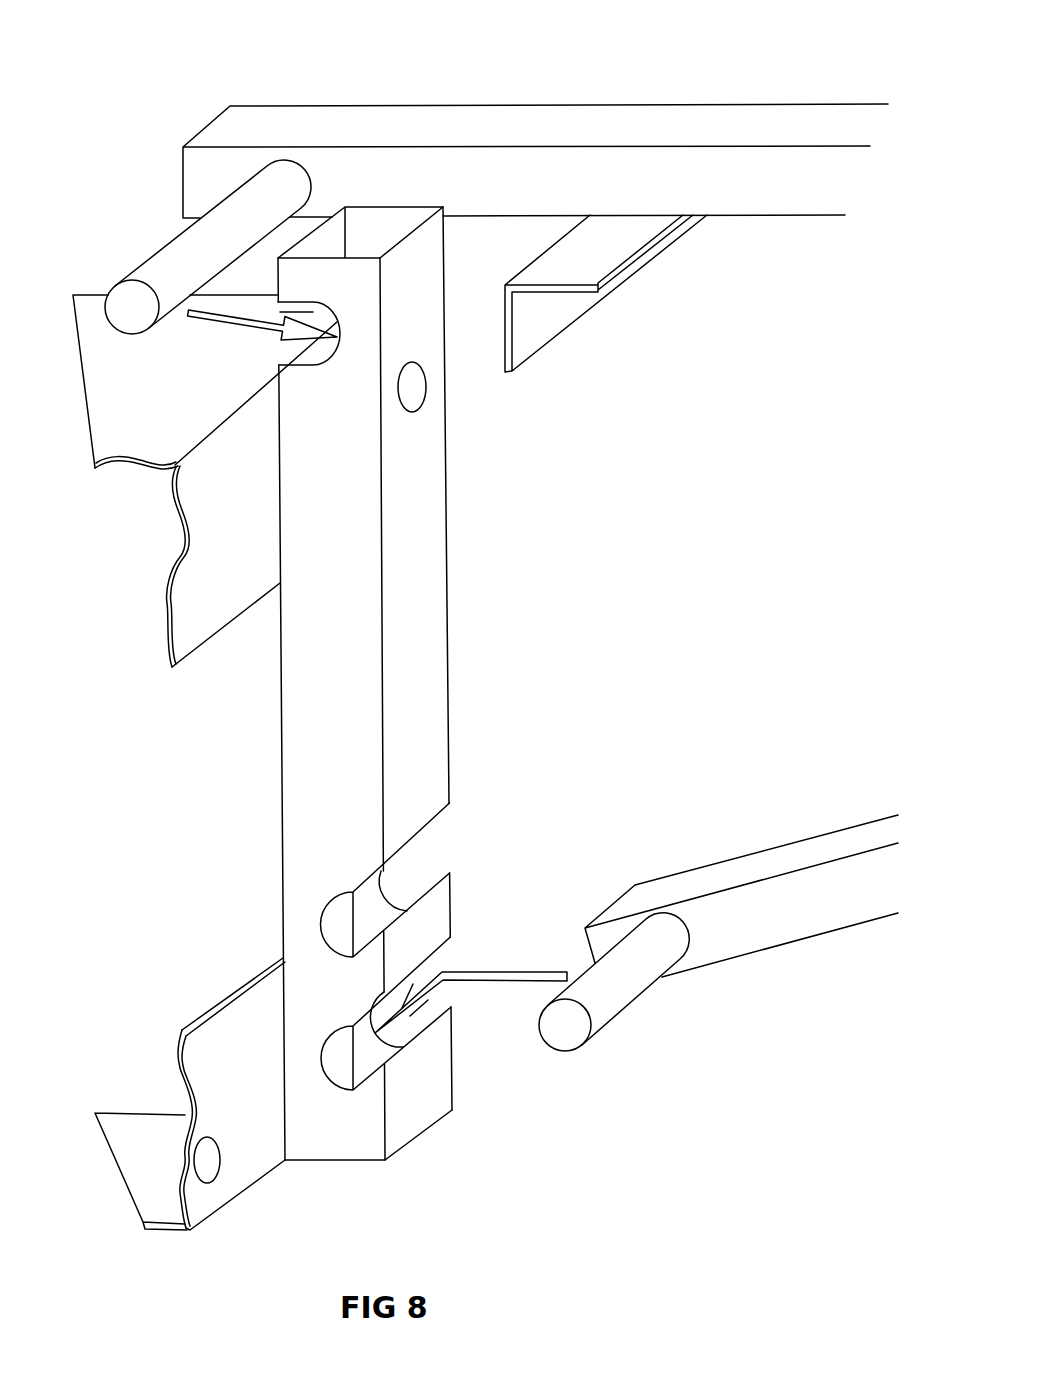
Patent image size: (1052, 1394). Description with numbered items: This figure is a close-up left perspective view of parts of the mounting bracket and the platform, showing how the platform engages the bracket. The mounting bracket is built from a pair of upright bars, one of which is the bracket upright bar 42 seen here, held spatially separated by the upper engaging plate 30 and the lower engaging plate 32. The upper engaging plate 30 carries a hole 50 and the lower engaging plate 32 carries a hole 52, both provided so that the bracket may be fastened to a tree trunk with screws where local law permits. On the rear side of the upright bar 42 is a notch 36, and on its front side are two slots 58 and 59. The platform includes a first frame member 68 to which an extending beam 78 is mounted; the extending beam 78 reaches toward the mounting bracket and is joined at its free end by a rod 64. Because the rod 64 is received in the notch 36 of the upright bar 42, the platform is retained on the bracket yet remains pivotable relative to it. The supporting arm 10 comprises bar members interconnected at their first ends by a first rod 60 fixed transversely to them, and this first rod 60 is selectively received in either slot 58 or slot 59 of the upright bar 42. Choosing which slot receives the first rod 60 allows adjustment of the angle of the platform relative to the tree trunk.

The supporting arm 10 is at (783, 915).
The upper engaging plate 30 is at (175, 523).
The lower engaging plate 32 is at (122, 1187).
The notch 36 is at (280, 315).
The bracket upright bar 42 is at (448, 583).
The hole 50 is at (412, 387).
The hole 52 is at (207, 1160).
The slot 58 is at (407, 857).
The slot 59 is at (423, 968).
The first rod 60 is at (620, 1012).
The rod 64 is at (170, 236).
The first frame member 68 is at (605, 295).
The extending beam 78 is at (220, 110).